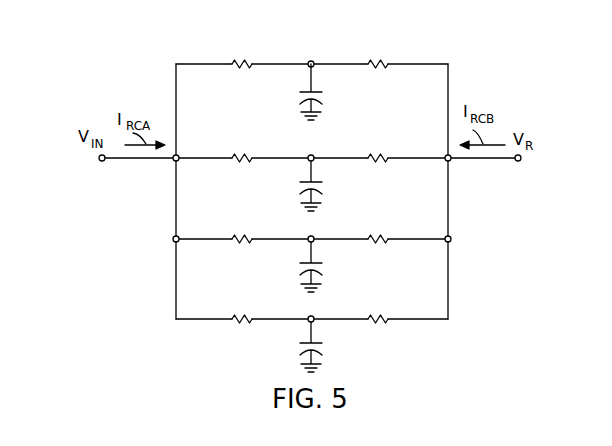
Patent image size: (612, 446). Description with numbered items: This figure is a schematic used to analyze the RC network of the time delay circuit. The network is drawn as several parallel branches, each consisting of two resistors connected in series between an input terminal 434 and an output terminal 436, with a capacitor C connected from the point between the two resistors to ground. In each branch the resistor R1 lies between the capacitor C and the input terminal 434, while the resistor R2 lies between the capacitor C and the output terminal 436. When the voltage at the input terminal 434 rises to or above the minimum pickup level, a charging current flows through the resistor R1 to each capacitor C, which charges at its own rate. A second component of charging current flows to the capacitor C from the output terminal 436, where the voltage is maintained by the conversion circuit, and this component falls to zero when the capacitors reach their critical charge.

The resistor R1 is at (240, 70).
The resistor R2 is at (375, 68).
The capacitor C is at (322, 97).
The input terminal 434 is at (100, 161).
The output terminal 436 is at (520, 161).